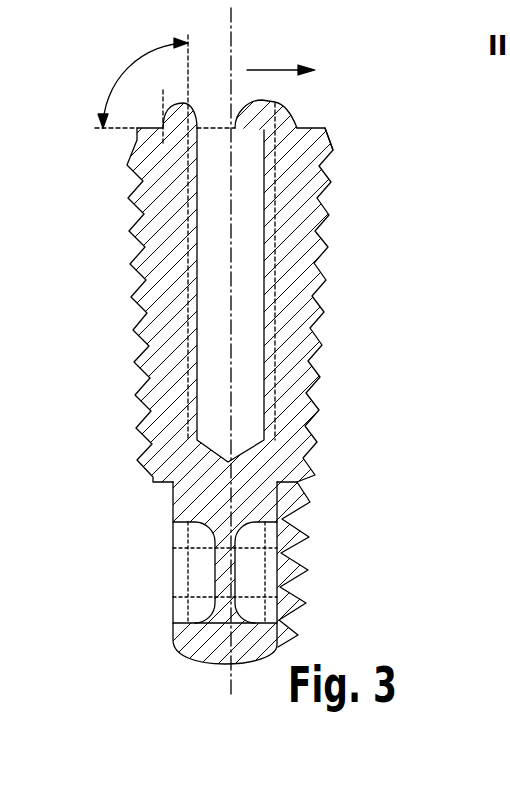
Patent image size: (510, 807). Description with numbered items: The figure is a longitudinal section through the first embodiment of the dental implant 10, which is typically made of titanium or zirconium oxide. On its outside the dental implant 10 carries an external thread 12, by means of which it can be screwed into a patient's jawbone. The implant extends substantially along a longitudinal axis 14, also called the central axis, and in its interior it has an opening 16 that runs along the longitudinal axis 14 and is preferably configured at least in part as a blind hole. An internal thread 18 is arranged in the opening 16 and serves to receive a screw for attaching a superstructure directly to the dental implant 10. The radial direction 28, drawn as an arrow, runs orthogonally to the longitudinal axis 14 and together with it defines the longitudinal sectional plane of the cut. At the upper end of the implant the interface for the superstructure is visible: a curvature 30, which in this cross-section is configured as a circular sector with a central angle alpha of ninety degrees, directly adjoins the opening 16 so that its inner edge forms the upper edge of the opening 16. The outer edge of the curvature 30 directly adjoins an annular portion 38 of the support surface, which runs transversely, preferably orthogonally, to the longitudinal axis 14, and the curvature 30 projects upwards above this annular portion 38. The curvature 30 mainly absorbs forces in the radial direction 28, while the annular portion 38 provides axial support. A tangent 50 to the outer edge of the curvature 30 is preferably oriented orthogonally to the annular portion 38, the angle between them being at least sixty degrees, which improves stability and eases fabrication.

The dental implant 10 is at (390, 192).
The external thread 12 is at (320, 328).
The longitudinal axis 14 is at (232, 15).
The opening 16 is at (258, 252).
The internal thread 18 is at (150, 345).
The radial direction 28 is at (258, 68).
The curvature 30 is at (292, 106).
The annular portion 38 is at (312, 127).
The tangent 50 is at (137, 133).